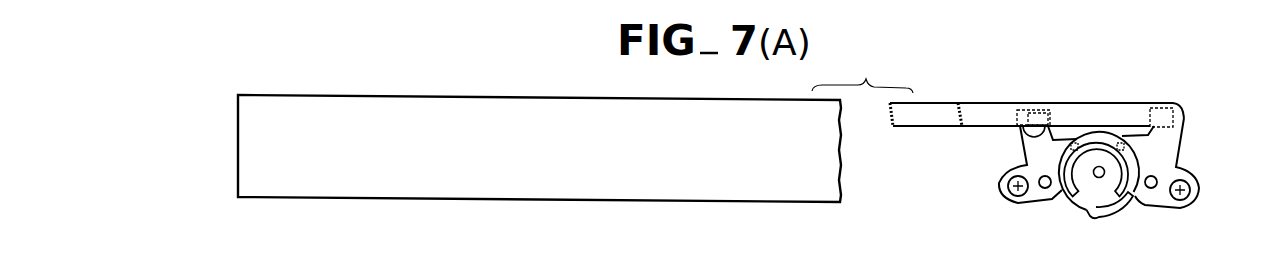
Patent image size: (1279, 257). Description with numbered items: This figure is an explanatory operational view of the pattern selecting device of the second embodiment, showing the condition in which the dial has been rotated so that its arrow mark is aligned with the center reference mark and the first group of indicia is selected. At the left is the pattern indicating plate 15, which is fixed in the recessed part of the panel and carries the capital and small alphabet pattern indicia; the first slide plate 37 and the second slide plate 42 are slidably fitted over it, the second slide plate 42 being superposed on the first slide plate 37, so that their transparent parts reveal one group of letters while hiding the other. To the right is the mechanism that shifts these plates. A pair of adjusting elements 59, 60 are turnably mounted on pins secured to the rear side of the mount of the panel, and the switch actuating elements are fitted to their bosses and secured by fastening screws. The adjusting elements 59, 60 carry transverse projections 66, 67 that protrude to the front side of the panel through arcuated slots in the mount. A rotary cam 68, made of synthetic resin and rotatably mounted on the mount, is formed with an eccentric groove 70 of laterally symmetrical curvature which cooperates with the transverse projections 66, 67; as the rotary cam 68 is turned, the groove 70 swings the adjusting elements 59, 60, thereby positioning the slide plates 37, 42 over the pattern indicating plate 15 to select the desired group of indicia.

The pattern indicating plate 15 is at (398, 107).
The first slide plate 37 is at (928, 115).
The second slide plate 42 is at (988, 115).
The adjusting element 59 is at (1025, 150).
The adjusting element 60 is at (1178, 150).
The transverse projection 66 is at (1077, 146).
The transverse projection 67 is at (1122, 146).
The rotary cam 68 is at (1075, 205).
The eccentric groove 70 is at (1122, 178).